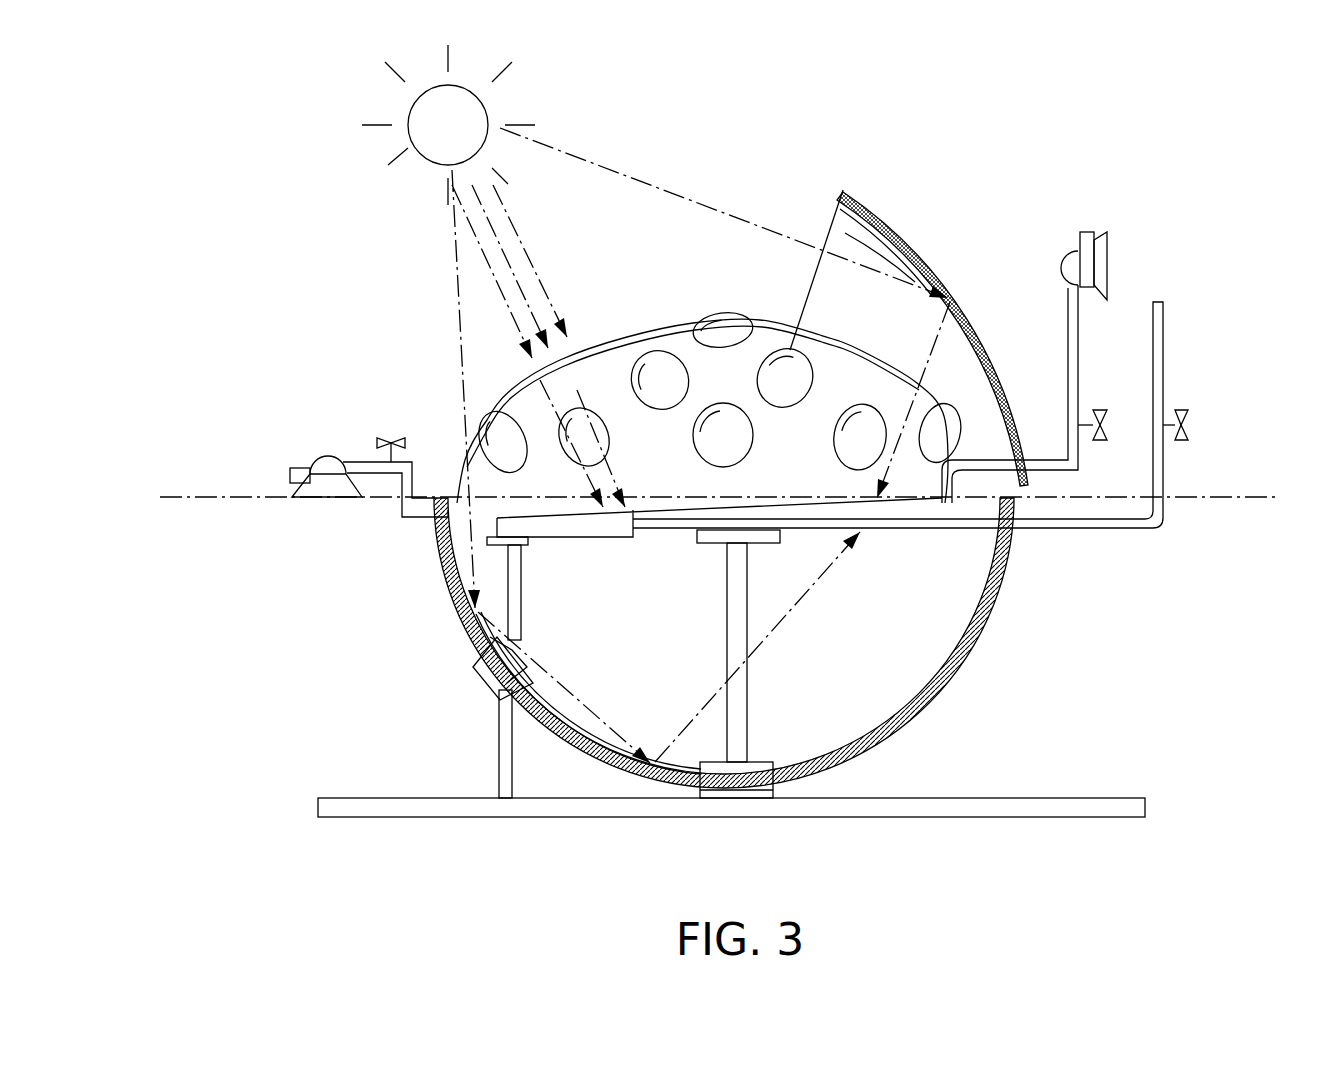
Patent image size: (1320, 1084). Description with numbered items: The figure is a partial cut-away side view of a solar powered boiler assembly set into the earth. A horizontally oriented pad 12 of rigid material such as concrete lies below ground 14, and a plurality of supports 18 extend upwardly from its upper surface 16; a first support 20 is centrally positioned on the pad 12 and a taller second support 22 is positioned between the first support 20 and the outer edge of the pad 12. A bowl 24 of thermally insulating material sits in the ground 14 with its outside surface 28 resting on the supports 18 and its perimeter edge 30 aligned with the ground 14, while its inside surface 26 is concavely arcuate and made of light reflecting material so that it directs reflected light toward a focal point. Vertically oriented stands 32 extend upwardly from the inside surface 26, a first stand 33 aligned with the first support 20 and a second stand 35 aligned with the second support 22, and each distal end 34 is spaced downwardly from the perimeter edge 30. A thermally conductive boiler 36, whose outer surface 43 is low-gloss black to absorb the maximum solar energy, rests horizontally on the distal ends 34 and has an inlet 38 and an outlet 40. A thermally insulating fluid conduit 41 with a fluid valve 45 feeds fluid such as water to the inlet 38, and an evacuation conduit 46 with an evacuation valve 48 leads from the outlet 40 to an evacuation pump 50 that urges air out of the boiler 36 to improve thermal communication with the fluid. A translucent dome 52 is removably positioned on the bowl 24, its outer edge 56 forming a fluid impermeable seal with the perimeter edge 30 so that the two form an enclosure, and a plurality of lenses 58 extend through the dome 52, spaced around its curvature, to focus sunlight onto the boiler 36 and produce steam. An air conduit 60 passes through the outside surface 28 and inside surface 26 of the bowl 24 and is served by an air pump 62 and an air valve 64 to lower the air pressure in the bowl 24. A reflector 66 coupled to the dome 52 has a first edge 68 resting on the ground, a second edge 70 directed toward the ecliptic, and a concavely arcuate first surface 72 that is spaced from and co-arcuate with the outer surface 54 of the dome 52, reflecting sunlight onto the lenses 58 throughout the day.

The pad 12 is at (330, 818).
The ground 14 is at (200, 497).
The upper surface 16 is at (350, 797).
The supports 18 is at (718, 798).
The first support 20 is at (773, 797).
The second support 22 is at (500, 763).
The bowl 24 is at (973, 648).
The inside surface 26 is at (972, 613).
The outside surface 28 is at (950, 685).
The perimeter edge 30 is at (1117, 560).
The stands 32 is at (553, 540).
The first stand 33 is at (475, 585).
The distal end 34 is at (505, 564).
The second stand 35 is at (747, 733).
The boiler 36 is at (797, 505).
The inlet 38 is at (635, 505).
The outlet 40 is at (948, 500).
The fluid conduit 41 is at (1163, 317).
The outer surface 43 is at (587, 537).
The fluid valve 45 is at (1188, 422).
The evacuation conduit 46 is at (1078, 330).
The evacuation valve 48 is at (1105, 440).
The evacuation pump 50 is at (1077, 257).
The dome 52 is at (567, 440).
The outer surface 54 is at (652, 332).
The outer edge 56 is at (440, 547).
The lenses 58 is at (533, 367).
The air conduit 60 is at (372, 462).
The air pump 62 is at (323, 463).
The air valve 64 is at (372, 462).
The reflector 66 is at (880, 222).
The first edge 68 is at (1030, 535).
The second edge 70 is at (858, 212).
The first surface 72 is at (827, 225).